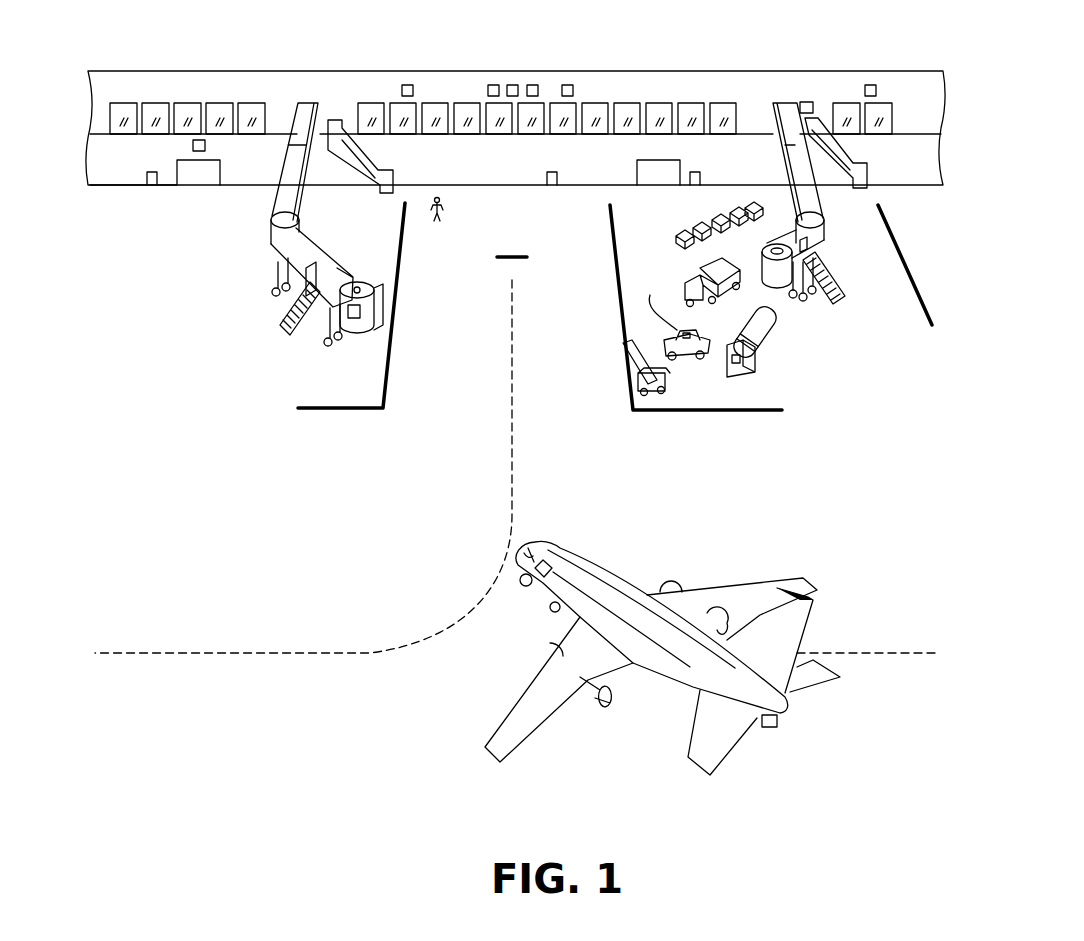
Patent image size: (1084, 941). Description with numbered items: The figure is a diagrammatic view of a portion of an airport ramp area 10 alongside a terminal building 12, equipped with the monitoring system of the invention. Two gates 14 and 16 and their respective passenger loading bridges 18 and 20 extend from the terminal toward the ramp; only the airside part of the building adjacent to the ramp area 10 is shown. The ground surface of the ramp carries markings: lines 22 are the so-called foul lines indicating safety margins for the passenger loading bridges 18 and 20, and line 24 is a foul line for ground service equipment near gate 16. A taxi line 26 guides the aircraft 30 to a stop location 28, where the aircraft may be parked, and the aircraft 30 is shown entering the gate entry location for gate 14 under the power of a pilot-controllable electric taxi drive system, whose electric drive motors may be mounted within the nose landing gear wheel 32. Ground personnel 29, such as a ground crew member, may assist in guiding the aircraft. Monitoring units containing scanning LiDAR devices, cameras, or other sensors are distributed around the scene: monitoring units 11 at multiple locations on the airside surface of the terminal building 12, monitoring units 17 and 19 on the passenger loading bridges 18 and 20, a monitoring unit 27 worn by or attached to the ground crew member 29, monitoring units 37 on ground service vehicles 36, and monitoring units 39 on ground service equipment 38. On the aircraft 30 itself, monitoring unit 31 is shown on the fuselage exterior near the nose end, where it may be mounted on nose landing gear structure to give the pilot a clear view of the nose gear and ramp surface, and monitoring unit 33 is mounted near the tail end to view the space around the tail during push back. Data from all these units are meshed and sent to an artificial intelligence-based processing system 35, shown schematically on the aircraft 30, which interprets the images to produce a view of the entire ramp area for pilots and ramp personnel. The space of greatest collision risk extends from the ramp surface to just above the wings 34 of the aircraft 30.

The airport ramp area 10 is at (138, 482).
The monitoring units 11 is at (566, 85).
The terminal building 12 is at (143, 102).
The gate 14 is at (309, 92).
The gate 16 is at (782, 92).
The monitoring unit 17 is at (357, 290).
The passenger loading bridge 18 is at (270, 210).
The monitoring unit 19 is at (768, 250).
The passenger loading bridge 20 is at (822, 215).
The lines 22 is at (326, 416).
The line 24 is at (686, 424).
The taxi line 26 is at (512, 398).
The monitoring unit 27 is at (435, 212).
The stop location 28 is at (515, 253).
The ground personnel 29 is at (452, 200).
The aircraft 30 is at (657, 639).
The monitoring unit 31 is at (526, 587).
The nose landing gear wheel 32 is at (548, 610).
The monitoring unit 33 is at (770, 728).
The wings 34 is at (775, 588).
The processing system 35 is at (548, 560).
The ground service vehicles 36 is at (688, 283).
The monitoring units 37 is at (707, 333).
The ground service equipment 38 is at (730, 197).
The monitoring units 39 is at (700, 215).